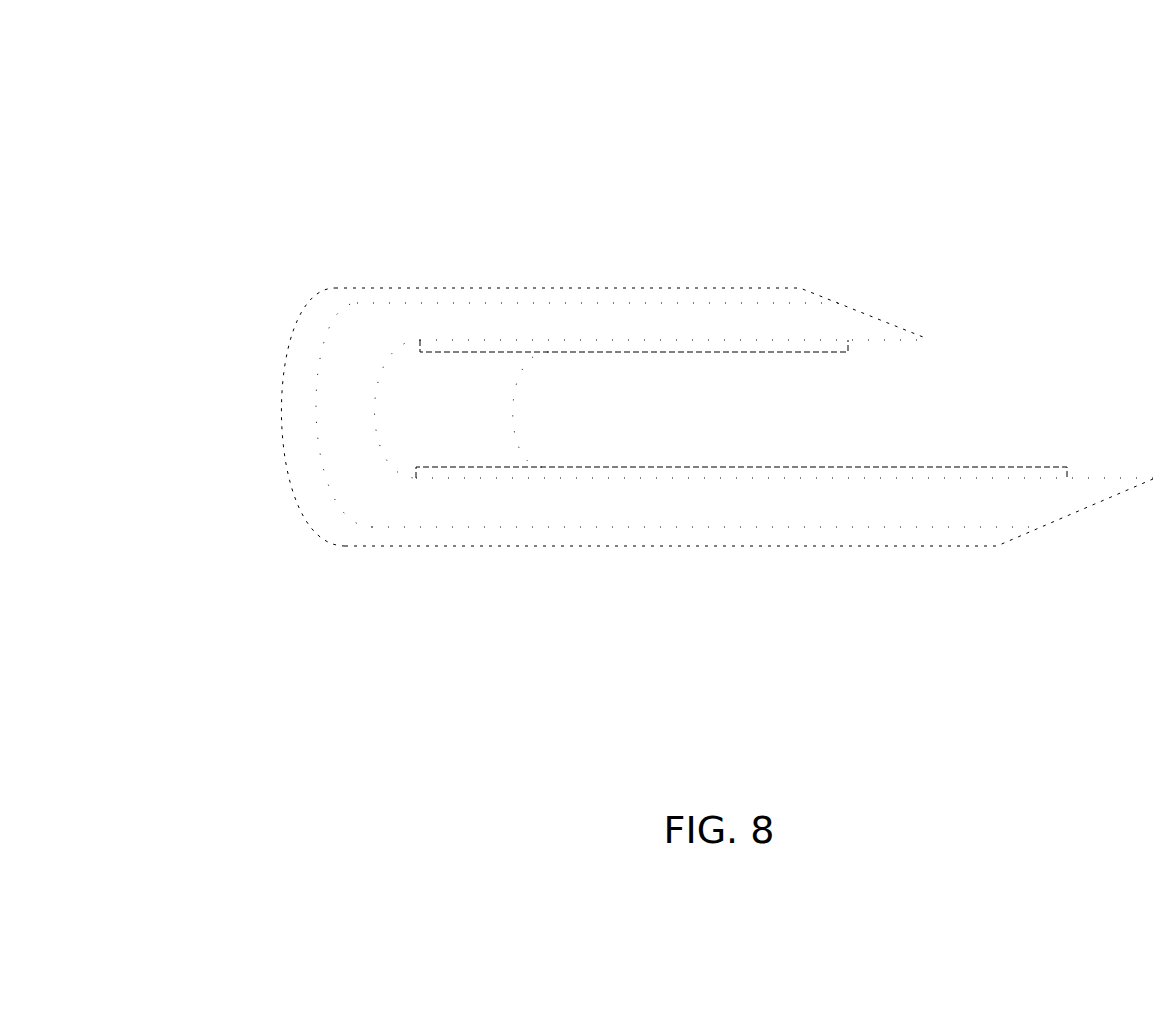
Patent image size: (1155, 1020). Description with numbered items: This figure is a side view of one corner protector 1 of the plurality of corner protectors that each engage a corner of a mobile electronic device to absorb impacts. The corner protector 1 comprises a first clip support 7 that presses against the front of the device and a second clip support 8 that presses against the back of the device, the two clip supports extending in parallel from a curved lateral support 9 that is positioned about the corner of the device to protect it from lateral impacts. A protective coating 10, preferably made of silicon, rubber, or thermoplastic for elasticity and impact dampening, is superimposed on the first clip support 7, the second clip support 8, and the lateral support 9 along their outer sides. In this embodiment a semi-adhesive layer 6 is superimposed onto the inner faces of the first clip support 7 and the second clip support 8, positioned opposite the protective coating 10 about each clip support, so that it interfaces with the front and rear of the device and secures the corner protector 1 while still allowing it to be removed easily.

The corner protector 1 is at (342, 141).
The semi-adhesive layer 6 is at (805, 348).
The first clip support 7 is at (853, 318).
The second clip support 8 is at (1048, 504).
The lateral support 9 is at (480, 412).
The protective coating 10 is at (290, 388).